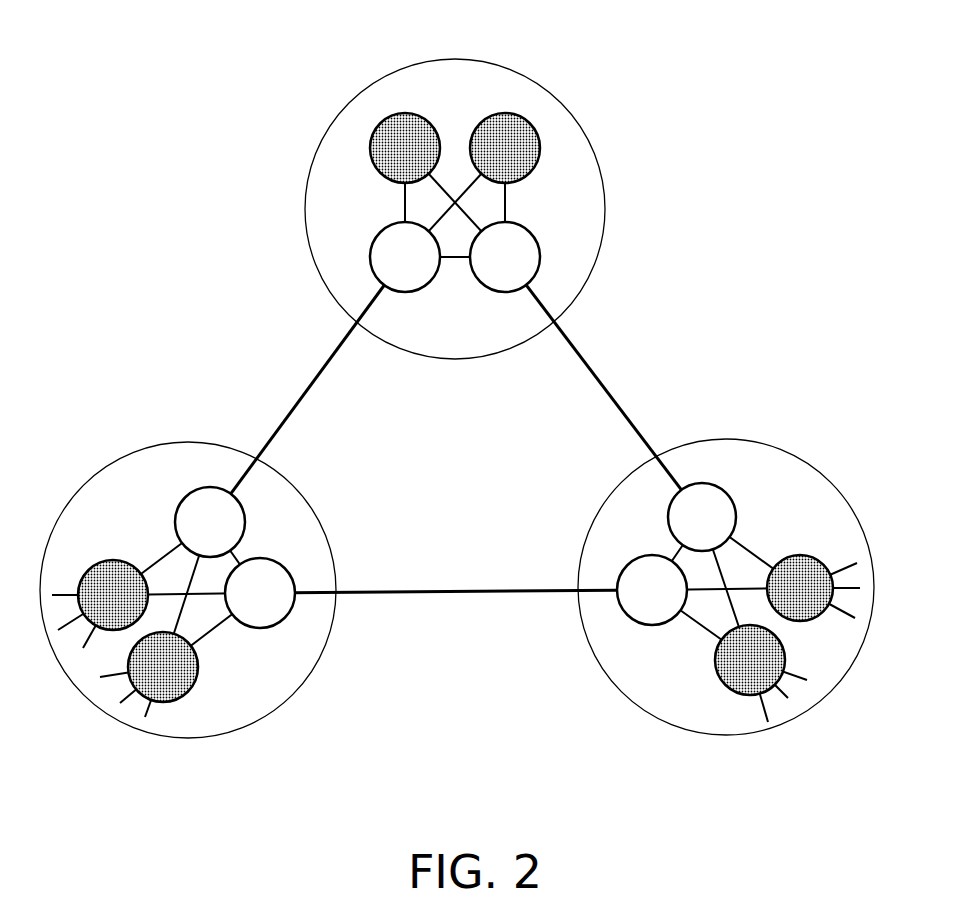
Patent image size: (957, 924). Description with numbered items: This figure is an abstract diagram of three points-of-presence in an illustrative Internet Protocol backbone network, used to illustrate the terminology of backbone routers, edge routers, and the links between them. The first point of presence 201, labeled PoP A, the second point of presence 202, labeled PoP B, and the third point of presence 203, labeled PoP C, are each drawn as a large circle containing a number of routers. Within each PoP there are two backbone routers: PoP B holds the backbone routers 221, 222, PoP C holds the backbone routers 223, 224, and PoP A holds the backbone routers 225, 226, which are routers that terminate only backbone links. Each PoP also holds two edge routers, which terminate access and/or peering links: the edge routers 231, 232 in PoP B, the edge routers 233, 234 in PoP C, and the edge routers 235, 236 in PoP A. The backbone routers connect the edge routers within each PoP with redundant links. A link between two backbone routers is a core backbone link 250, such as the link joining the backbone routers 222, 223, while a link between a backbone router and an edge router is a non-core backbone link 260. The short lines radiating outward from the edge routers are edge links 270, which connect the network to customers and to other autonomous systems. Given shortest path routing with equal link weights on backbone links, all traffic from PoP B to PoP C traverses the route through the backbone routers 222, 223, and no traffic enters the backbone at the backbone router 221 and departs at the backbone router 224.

The point of presence 201 is at (455, 185).
The point of presence 202 is at (188, 576).
The point of presence 203 is at (726, 571).
The backbone router 221 is at (235, 522).
The backbone router 222 is at (273, 581).
The backbone router 223 is at (646, 579).
The backbone router 224 is at (722, 516).
The backbone router 225 is at (405, 280).
The backbone router 226 is at (505, 280).
The edge router 231 is at (113, 595).
The edge router 232 is at (163, 667).
The edge router 233 is at (750, 660).
The edge router 234 is at (800, 588).
The edge router 235 is at (381, 148).
The edge router 236 is at (522, 163).
The core backbone link 250 is at (456, 585).
The non-core backbone link 260 is at (215, 635).
The edge link 270 is at (157, 712).